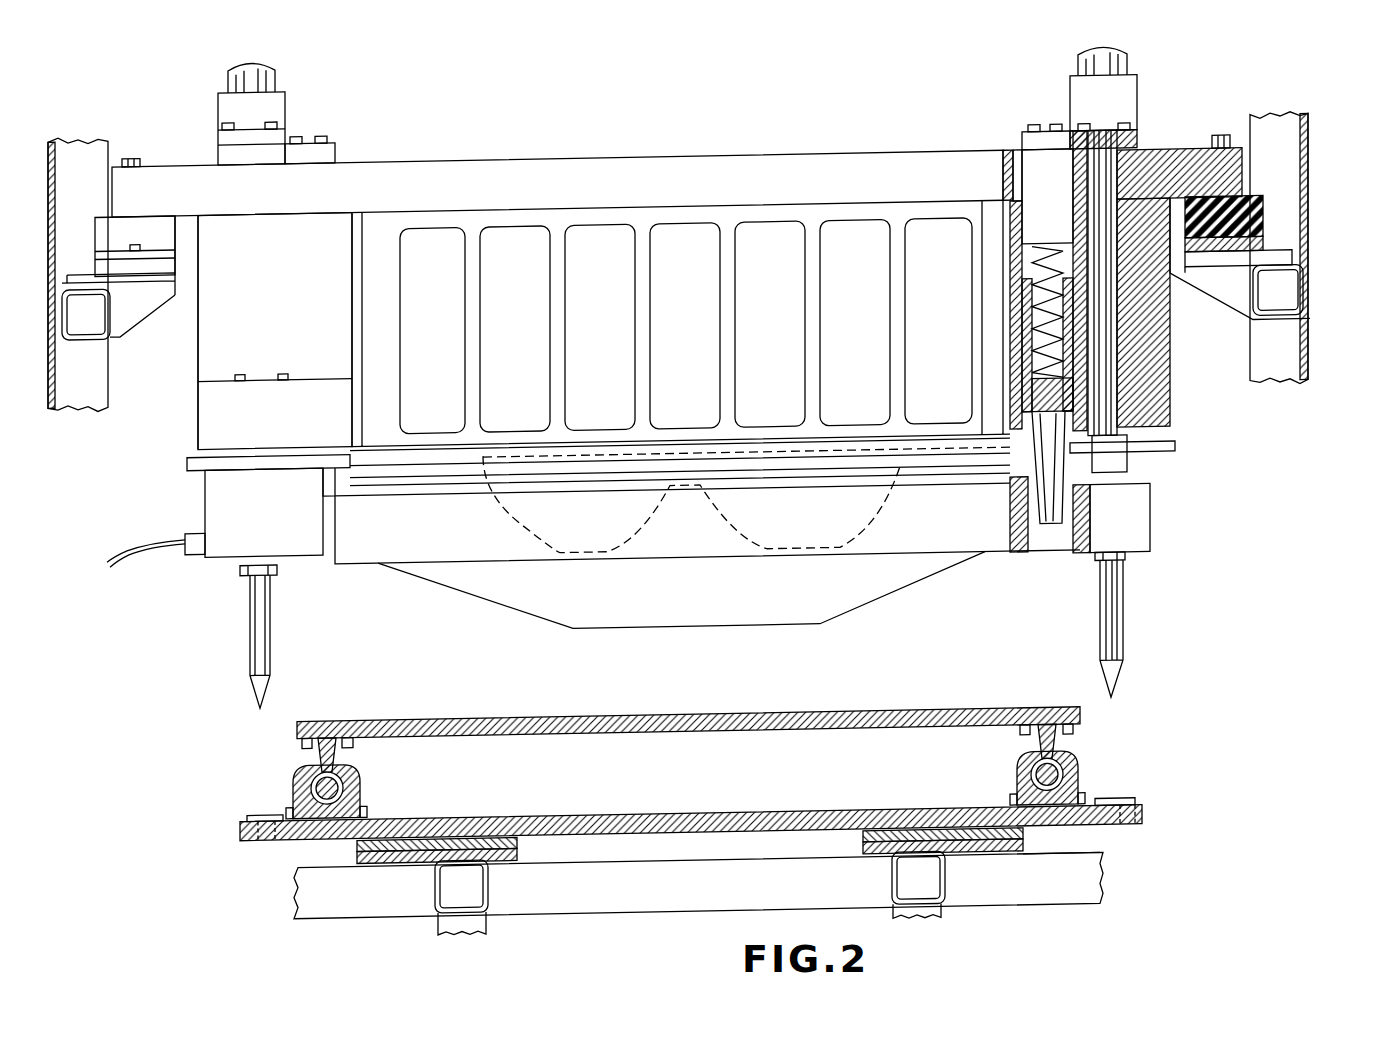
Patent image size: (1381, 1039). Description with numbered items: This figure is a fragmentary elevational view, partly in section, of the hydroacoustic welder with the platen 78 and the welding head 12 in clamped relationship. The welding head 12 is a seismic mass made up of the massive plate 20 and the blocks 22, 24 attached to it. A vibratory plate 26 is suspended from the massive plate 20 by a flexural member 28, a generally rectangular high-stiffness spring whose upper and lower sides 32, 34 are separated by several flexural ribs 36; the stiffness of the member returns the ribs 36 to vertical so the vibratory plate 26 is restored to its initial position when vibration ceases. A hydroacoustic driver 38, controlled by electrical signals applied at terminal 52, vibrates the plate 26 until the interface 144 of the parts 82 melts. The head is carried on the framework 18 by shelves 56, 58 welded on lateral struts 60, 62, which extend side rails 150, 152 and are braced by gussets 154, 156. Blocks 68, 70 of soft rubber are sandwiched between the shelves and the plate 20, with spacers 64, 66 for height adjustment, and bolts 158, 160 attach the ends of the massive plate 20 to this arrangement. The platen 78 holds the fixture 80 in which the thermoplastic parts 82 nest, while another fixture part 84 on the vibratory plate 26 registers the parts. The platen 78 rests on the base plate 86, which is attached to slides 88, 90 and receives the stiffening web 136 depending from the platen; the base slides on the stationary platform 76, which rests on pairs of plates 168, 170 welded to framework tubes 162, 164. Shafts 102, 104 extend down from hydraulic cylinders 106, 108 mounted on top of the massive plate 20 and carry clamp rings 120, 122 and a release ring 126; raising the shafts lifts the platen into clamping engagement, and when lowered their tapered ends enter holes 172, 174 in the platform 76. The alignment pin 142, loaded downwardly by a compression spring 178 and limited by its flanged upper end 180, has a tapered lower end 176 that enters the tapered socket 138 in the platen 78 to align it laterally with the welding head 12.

The welder head 12 is at (824, 206).
The framework 18 is at (55, 366).
The massive plate 20 is at (580, 152).
The block 22 is at (210, 388).
The block 24 is at (1166, 360).
The vibratory plate 26 is at (1176, 456).
The flexural member 28 is at (735, 283).
The upper side 32 is at (712, 444).
The lower side 34 is at (666, 206).
The flexural ribs 36 is at (465, 298).
The hydroacoustic driver 38 is at (232, 549).
The terminal 52 is at (185, 545).
The shelf 56 is at (143, 270).
The shelf 58 is at (1292, 268).
The lateral strut 60 is at (65, 300).
The lateral strut 62 is at (1303, 299).
The spacer 64 is at (1264, 253).
The spacer 66 is at (117, 257).
The block of vibration isolating material 68 is at (1264, 228).
The block of vibration isolating material 70 is at (108, 216).
The stationary platform 76 is at (240, 823).
The platen 78 is at (370, 570).
The fixture 80 is at (407, 491).
The parts 82 is at (862, 520).
The fixture part 84 is at (430, 471).
The base plate 86 is at (500, 732).
The slide 88 is at (357, 781).
The slide 90 is at (1022, 777).
The shaft 102 is at (252, 636).
The shaft 104 is at (1117, 398).
The hydraulic cylinder 106 is at (272, 70).
The hydraulic cylinder 108 is at (1130, 72).
The clamp ring 120 is at (274, 565).
The clamp ring 122 is at (1126, 566).
The release ring 126 is at (1128, 472).
The web 136 is at (548, 618).
The socket 138 is at (1120, 511).
The alignment pin 142 is at (1035, 426).
The interface 144 is at (1015, 470).
The side rail 150 is at (1282, 128).
The side rail 152 is at (62, 140).
The gusset 154 is at (1232, 308).
The gusset 156 is at (133, 310).
The bolt 158 is at (1216, 145).
The bolt 160 is at (127, 148).
The rectangular tube 162 is at (488, 883).
The tube 164 is at (1075, 866).
The pair of plates 168 is at (425, 858).
The pair of plates 170 is at (965, 858).
The hole 172 is at (262, 806).
The hole 174 is at (1120, 806).
The tapered lower end 176 is at (1052, 532).
The compression spring 178 is at (1047, 262).
The flanged upper end 180 is at (1030, 286).